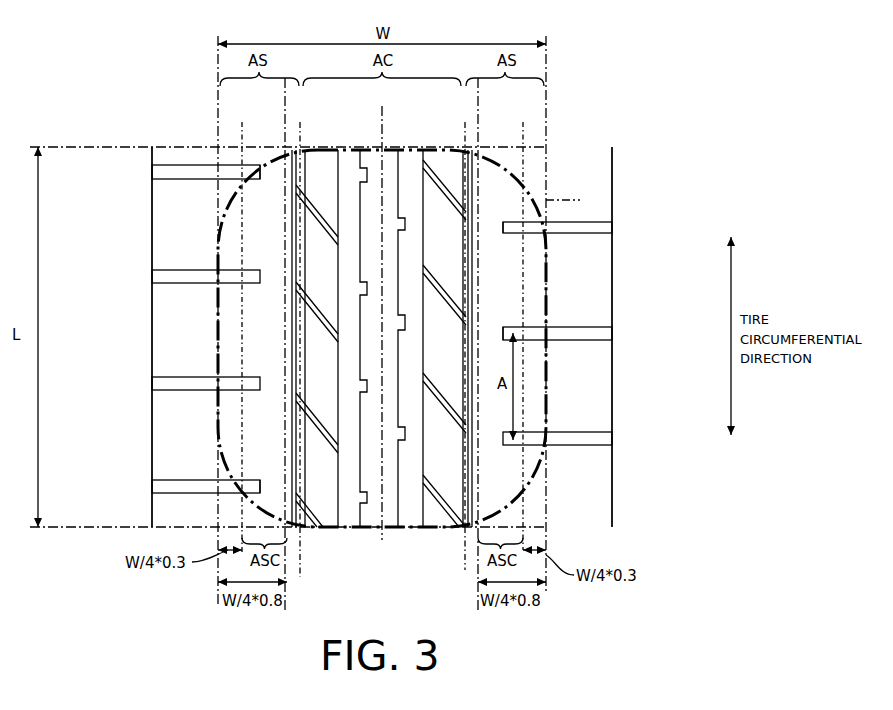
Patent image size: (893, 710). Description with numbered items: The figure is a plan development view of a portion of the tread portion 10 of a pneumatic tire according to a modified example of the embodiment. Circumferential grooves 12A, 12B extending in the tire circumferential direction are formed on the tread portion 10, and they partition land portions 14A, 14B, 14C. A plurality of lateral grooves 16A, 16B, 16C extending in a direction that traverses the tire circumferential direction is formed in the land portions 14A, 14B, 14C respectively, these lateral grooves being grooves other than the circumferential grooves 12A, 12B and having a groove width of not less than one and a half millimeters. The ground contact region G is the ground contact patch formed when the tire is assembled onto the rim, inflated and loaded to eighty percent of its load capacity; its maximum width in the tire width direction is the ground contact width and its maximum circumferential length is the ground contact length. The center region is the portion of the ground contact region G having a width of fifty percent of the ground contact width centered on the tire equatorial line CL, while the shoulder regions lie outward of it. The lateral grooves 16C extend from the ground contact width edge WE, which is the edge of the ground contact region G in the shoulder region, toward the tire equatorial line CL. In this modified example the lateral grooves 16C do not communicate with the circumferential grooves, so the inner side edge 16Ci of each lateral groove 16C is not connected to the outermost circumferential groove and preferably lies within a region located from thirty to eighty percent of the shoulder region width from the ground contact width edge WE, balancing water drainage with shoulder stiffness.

The tread portion 10 is at (530, 202).
The circumferential groove 12A is at (348, 172).
The circumferential groove 12B is at (250, 187).
The land portion 14A is at (382, 515).
The land portion 14B is at (323, 400).
The land portion 14C is at (165, 358).
The lateral groove 16A is at (448, 373).
The lateral groove 16B is at (318, 300).
The lateral groove 16C is at (182, 173).
The inner side edge 16Ci is at (257, 385).
The tire equatorial line CL is at (382, 314).
The ground contact width edge WE is at (215, 355).
The ground contact region G is at (580, 200).